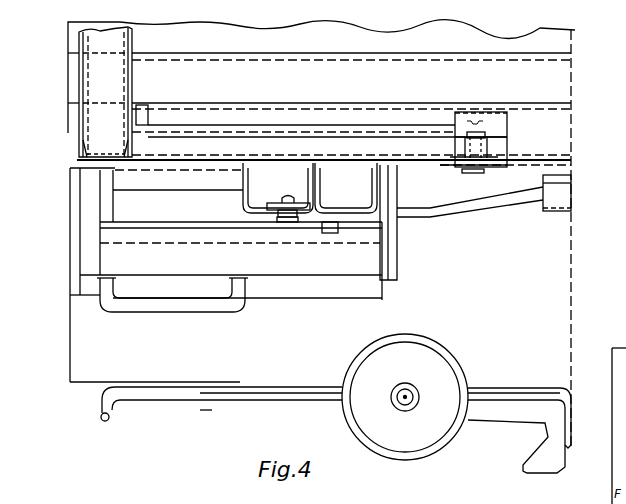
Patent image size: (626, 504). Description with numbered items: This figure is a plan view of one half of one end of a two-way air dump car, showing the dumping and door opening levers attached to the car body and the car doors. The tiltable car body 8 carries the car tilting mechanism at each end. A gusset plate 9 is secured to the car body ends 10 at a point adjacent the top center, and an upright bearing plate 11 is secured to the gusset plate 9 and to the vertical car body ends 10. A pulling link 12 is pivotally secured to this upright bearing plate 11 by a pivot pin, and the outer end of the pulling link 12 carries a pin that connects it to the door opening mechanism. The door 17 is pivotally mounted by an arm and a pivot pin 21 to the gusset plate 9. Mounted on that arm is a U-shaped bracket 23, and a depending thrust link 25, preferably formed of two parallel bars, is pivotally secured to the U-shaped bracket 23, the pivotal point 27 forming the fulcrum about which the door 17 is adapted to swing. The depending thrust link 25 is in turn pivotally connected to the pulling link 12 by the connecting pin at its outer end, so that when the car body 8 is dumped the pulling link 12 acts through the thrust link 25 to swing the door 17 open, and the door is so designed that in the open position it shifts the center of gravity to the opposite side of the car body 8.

The tiltable car body 8 is at (321, 90).
The gusset plate 9 is at (557, 162).
The car body ends 10 is at (312, 134).
The upright bearing plate 11 is at (560, 200).
The pulling link 12 is at (482, 203).
The door 17 is at (83, 143).
The pivot pin 21 is at (473, 135).
The U-shaped bracket 23 is at (250, 193).
The depending thrust link 25 is at (241, 227).
The pivotal point 27 is at (290, 200).